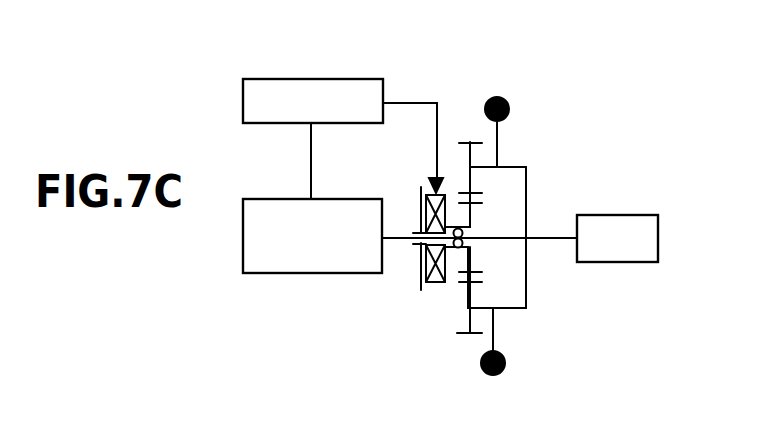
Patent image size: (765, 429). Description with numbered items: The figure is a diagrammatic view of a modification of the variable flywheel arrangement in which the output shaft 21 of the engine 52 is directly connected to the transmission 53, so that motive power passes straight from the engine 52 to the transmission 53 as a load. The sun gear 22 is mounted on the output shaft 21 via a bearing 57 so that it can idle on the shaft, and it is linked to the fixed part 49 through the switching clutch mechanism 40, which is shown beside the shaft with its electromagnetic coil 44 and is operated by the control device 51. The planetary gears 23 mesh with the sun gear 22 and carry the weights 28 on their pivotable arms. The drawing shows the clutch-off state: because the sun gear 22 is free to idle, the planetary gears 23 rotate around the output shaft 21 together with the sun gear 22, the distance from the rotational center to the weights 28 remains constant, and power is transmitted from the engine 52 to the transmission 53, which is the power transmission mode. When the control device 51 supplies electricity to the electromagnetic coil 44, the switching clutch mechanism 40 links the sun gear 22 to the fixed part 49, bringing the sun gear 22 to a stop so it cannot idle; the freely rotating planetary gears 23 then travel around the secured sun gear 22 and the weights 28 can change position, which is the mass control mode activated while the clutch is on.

The control device 51 is at (265, 79).
The electromagnetic coil 44 is at (442, 194).
The engine 52 is at (277, 277).
The output shaft 21 is at (403, 232).
The fixed part 49 is at (418, 258).
The switching clutch mechanism 40 is at (430, 292).
The planetary gears 23 is at (470, 181).
The sun gear 22 is at (470, 210).
The bearing 57 is at (465, 243).
The weights 28 is at (508, 97).
The transmission 53 is at (613, 263).